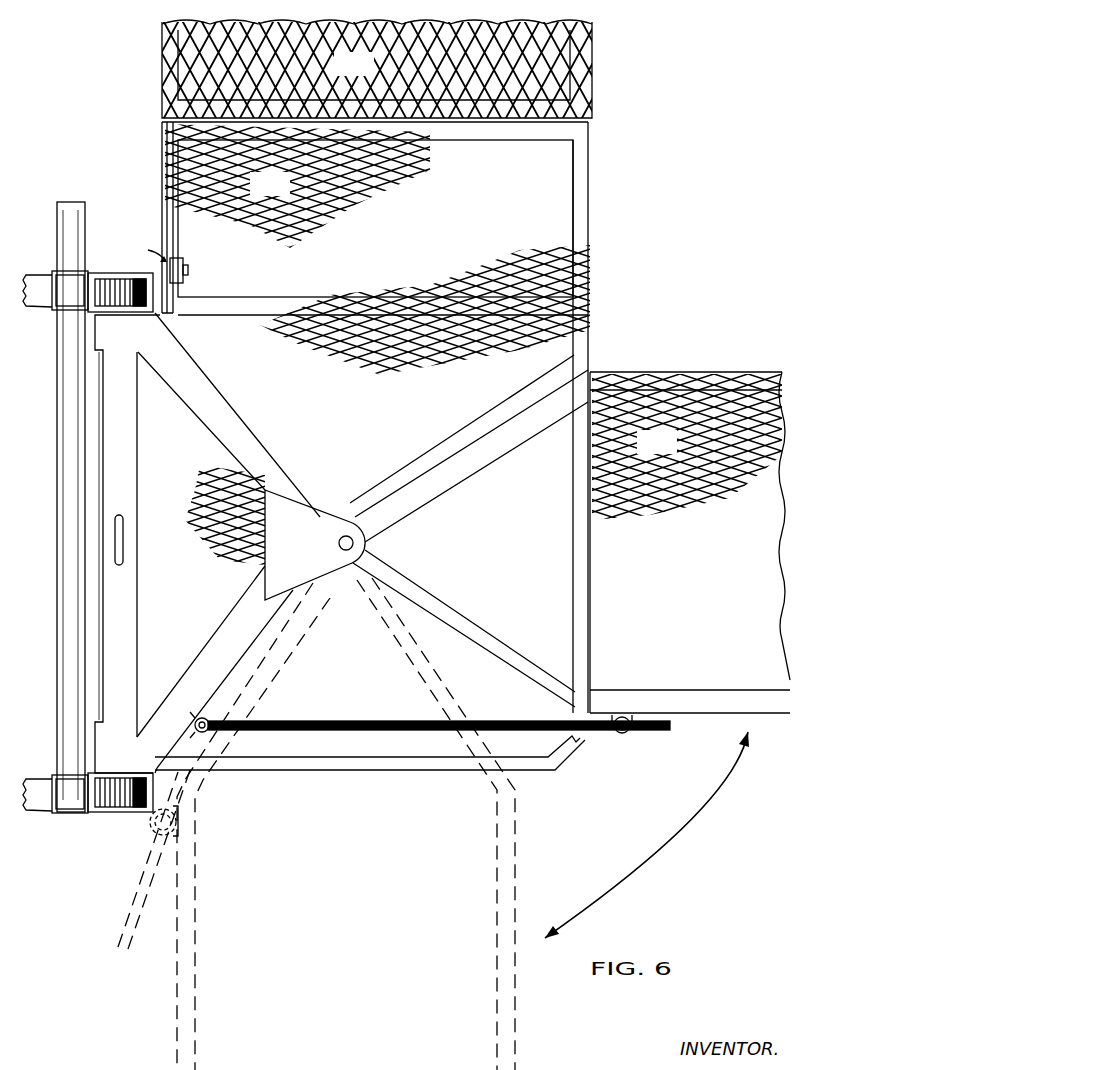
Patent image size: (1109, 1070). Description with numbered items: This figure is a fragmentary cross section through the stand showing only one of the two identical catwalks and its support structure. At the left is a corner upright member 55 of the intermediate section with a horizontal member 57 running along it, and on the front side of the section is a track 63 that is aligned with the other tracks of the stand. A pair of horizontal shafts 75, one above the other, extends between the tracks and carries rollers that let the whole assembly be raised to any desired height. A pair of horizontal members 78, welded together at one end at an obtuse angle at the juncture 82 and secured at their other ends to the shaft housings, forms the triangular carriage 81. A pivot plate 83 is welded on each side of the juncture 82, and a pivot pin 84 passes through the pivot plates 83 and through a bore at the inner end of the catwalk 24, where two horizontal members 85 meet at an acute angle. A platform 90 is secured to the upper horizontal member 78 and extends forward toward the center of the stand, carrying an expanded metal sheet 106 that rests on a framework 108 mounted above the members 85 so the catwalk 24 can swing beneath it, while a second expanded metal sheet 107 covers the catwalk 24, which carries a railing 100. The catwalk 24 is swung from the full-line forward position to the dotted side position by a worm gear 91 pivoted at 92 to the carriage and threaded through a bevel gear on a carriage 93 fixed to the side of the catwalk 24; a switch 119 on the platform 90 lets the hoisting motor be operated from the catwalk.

The catwalk 24 is at (690, 518).
The upright member 55 is at (56, 272).
The horizontal member 57 is at (57, 624).
The track 63 is at (98, 274).
The shaft 75 is at (140, 592).
The horizontal member 78 is at (258, 437).
The triangular carriage 81 is at (240, 405).
The juncture 82 is at (318, 572).
The pivot plate 83 is at (311, 512).
The pivot pin 84 is at (346, 550).
The horizontal member 85 is at (465, 480).
The platform 90 is at (600, 72).
The worm gear 91 is at (340, 720).
The pivot 92 is at (218, 720).
The carriage 93 is at (623, 735).
The railing 100 is at (170, 223).
The expanded metal sheet 106 is at (377, 135).
The expanded metal sheet 107 is at (687, 447).
The framework 108 is at (574, 568).
The switch 119 is at (189, 268).